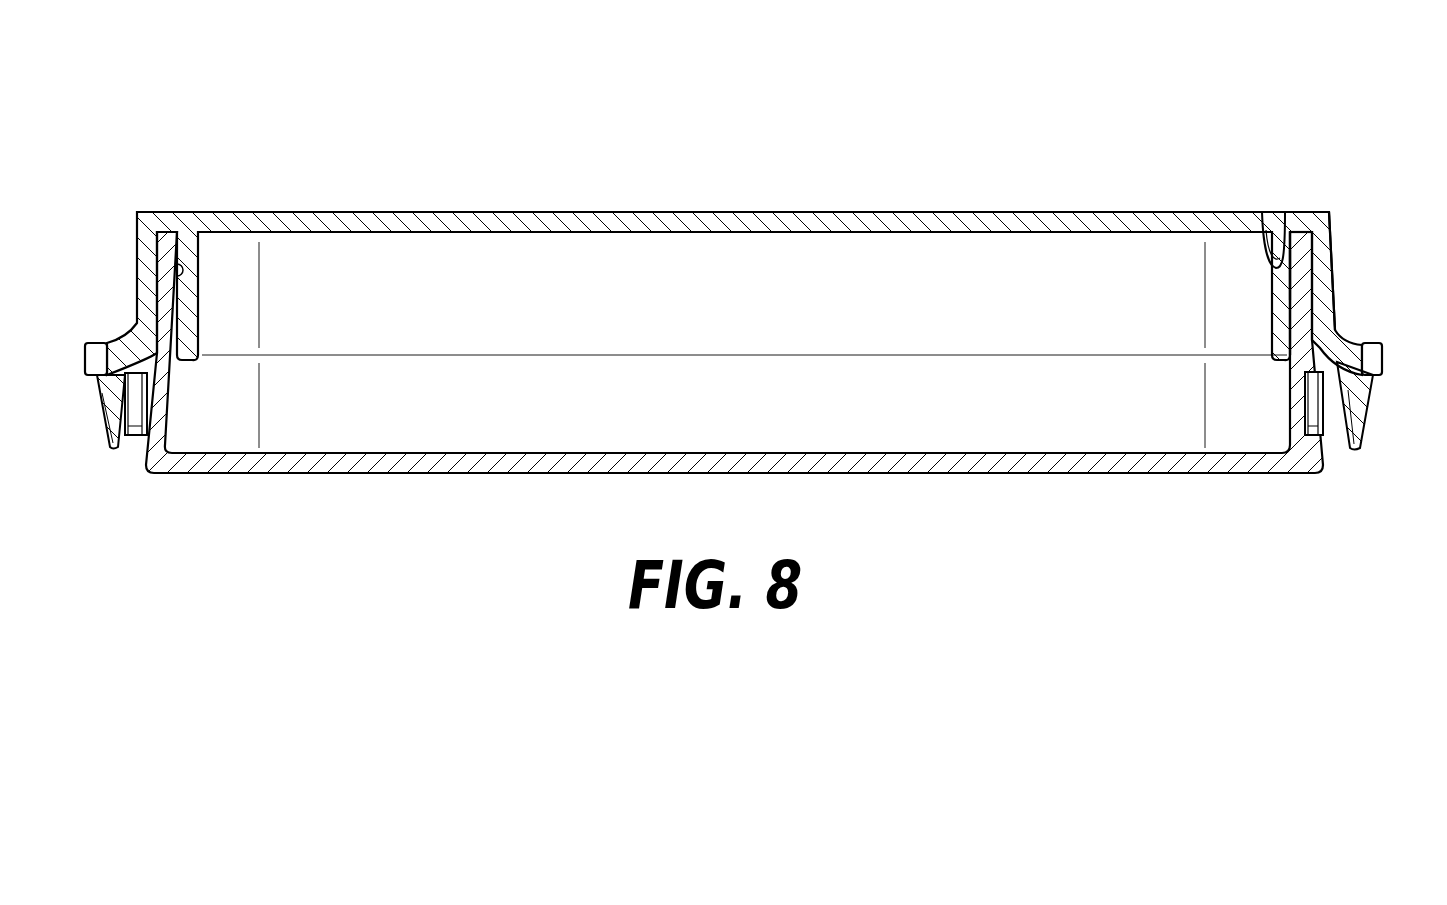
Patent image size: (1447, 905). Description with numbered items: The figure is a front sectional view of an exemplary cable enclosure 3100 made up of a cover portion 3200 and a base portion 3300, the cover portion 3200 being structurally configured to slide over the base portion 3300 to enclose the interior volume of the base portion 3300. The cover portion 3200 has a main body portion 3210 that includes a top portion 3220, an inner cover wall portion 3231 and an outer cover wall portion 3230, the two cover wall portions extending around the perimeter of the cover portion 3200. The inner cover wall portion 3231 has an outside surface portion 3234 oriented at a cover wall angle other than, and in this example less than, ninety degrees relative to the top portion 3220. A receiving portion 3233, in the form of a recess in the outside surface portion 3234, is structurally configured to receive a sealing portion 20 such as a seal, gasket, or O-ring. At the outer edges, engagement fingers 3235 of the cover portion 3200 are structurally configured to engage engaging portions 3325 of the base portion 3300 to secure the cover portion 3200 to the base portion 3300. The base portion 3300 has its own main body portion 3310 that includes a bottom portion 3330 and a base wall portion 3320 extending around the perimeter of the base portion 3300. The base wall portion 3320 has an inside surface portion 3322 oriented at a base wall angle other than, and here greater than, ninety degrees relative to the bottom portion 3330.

The enclosure 3100 is at (759, 271).
The cover portion 3200 is at (1056, 219).
The main body portion 3210 is at (581, 219).
The top portion 3220 is at (764, 219).
The outer cover wall portion 3230 is at (1328, 269).
The inner cover wall portion 3231 is at (1282, 340).
The receiving portion 3233 is at (1262, 212).
The outside surface portion 3234 is at (1288, 305).
The engagement finger 3235 is at (1363, 397).
The base portion 3300 is at (1287, 466).
The main body portion 3310 is at (1078, 455).
The base wall portion 3320 is at (1305, 250).
The inside surface portion 3322 is at (1300, 247).
The engaging portion 3325 is at (1375, 359).
The bottom portion 3330 is at (1197, 466).
The sealing portion 20 is at (1285, 262).